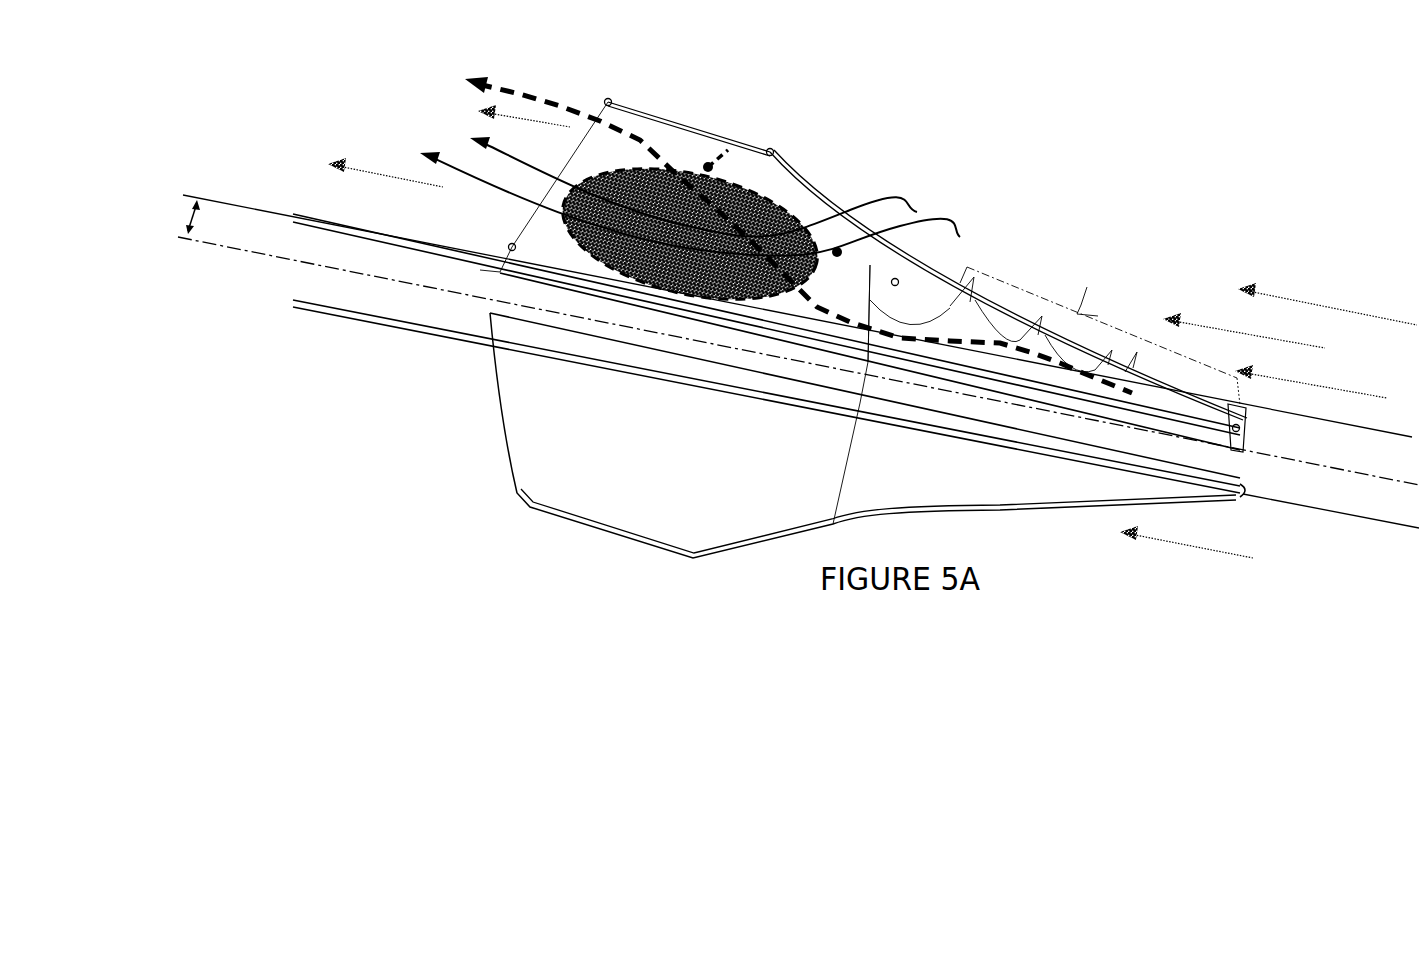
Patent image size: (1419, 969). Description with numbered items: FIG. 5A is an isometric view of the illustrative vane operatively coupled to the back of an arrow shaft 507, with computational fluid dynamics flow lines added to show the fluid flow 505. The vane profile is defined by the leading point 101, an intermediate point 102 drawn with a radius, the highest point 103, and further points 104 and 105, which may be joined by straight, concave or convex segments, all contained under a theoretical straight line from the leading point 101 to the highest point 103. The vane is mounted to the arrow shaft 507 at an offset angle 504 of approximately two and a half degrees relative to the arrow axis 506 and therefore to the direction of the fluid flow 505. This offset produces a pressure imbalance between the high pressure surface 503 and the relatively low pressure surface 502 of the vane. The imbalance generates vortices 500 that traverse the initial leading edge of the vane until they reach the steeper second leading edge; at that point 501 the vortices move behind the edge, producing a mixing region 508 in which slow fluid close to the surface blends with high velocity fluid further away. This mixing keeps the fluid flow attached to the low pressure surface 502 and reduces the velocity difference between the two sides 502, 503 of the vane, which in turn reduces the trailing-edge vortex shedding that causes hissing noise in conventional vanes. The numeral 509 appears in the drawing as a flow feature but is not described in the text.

The leading point 101 is at (1264, 428).
The intermediate point 102 is at (910, 299).
The highest point 103 is at (1007, 272).
The profile point 104 is at (641, 154).
The profile point 105 is at (491, 241).
The vortices 500 is at (1055, 329).
The vortex transition point 501 is at (837, 252).
The low pressure surface 502 is at (665, 143).
The high pressure surface 503 is at (728, 150).
The offset angle 504 is at (757, 304).
The fluid flow 505 is at (872, 331).
The arrow axis 506 is at (272, 253).
The arrow shaft 507 is at (363, 322).
The fluid velocity mixing region 508 is at (638, 247).
The flow separation line 509 is at (810, 299).